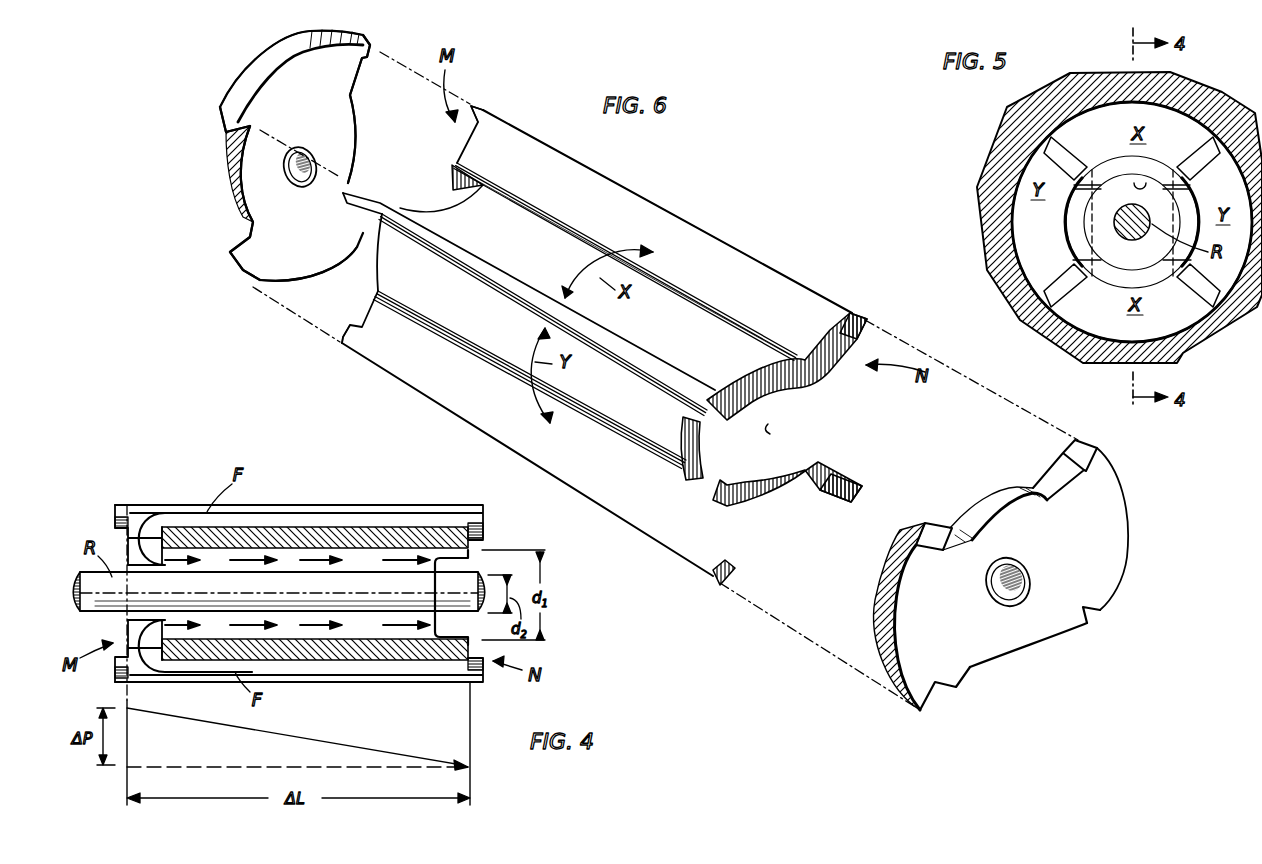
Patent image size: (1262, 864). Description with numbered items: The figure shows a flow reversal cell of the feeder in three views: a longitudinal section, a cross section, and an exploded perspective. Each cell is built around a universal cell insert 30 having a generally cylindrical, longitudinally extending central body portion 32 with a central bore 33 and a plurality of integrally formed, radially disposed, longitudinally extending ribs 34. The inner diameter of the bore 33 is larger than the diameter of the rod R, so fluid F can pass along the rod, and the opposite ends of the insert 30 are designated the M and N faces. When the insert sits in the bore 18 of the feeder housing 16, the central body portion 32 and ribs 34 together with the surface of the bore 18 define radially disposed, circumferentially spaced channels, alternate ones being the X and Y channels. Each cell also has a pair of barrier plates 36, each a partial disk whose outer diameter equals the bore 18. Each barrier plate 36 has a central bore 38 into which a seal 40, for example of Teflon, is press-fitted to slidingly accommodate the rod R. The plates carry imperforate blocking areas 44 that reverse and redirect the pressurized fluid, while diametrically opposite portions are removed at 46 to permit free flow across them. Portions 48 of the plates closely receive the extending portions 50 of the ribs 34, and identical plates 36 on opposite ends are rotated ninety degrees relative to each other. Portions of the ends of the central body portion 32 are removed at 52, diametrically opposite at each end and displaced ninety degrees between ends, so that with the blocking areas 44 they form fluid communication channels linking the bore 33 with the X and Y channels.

In FIG. 5, the feeder housing 16 is at (1008, 152).
In FIG. 5, the bore 18 is at (1015, 220).
In FIG. 6, the universal cell insert 30 is at (722, 224).
In FIG. 4, the universal cell insert 30 is at (178, 488).
In FIG. 6, the central body portion 32 is at (517, 217).
In FIG. 5, the central body portion 32 is at (1072, 251).
In FIG. 4, the central body portion 32 is at (380, 530).
In FIG. 6, the central bore 33 is at (768, 424).
In FIG. 5, the central bore 33 is at (1150, 178).
In FIG. 4, the central bore 33 is at (373, 667).
In FIG. 6, the ribs 34 is at (633, 200).
In FIG. 5, the ribs 34 is at (1087, 165).
In FIG. 4, the ribs 34 is at (348, 508).
In FIG. 6, the barrier plate 36 is at (232, 69).
In FIG. 6, the central bore 38 is at (299, 182).
In FIG. 6, the seal 40 is at (310, 150).
In FIG. 6, the imperforate blocking areas 44 is at (290, 84).
In FIG. 6, the removed portions 46 is at (357, 132).
In FIG. 6, the portions 48 is at (1080, 453).
In FIG. 6, the extending portions 50 is at (490, 108).
In FIG. 6, the removed portions 52 is at (443, 174).